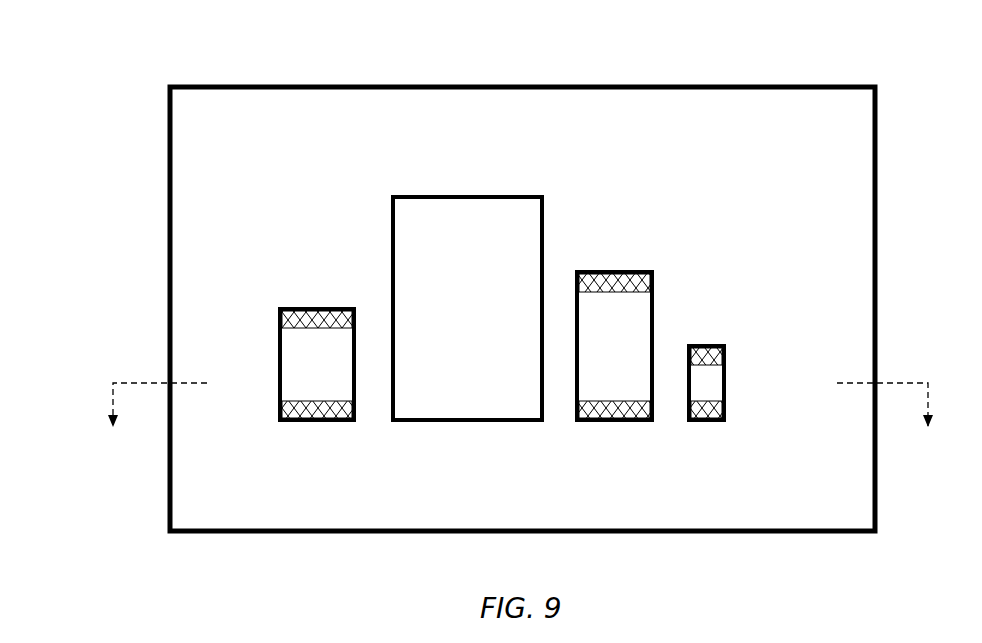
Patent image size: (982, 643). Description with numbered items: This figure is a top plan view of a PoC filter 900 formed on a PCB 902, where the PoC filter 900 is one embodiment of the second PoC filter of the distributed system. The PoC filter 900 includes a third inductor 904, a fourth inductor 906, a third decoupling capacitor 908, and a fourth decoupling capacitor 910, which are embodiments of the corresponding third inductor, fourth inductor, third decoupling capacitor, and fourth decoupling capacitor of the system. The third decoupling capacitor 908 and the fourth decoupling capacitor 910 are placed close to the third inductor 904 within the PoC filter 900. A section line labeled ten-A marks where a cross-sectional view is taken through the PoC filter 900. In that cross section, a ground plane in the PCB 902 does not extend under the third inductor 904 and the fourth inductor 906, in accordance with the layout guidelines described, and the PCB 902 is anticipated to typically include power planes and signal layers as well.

The PoC filter 900 is at (86, 50).
The PCB 902 is at (260, 523).
The third inductor 904 is at (385, 183).
The fourth inductor 906 is at (275, 292).
The third decoupling capacitor 908 is at (614, 261).
The fourth decoupling capacitor 910 is at (706, 331).